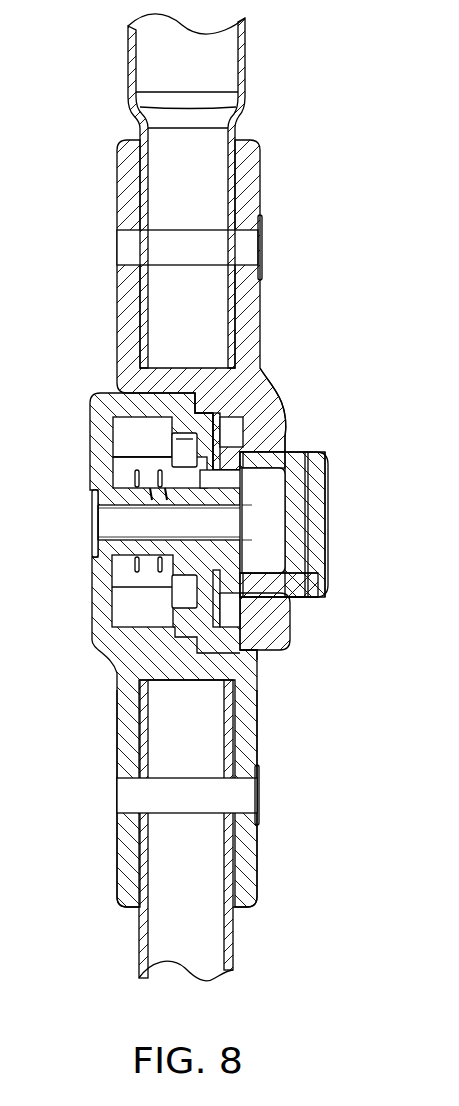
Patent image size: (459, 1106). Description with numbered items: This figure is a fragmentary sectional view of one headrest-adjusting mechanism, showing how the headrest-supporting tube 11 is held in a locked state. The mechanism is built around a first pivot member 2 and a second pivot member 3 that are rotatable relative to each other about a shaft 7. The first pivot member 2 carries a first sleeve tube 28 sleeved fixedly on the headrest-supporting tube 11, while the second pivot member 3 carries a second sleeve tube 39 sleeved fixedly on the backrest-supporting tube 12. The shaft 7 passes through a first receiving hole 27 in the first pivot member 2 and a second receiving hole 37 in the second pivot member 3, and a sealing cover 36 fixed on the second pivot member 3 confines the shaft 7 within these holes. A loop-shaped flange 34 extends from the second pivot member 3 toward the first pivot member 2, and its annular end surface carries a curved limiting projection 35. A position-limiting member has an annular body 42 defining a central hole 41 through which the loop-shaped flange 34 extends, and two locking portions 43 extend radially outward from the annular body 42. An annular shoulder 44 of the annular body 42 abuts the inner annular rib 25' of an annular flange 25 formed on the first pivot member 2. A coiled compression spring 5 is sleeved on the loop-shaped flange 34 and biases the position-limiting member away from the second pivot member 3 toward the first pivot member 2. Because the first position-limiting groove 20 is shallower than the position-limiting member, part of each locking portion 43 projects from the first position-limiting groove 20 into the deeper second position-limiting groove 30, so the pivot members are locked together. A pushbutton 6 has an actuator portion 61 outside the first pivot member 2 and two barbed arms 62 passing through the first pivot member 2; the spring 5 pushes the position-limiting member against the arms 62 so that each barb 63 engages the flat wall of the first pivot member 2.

The first pivot member 2 is at (278, 378).
The second pivot member 3 is at (103, 686).
The coiled compression spring 5 is at (150, 492).
The pushbutton 6 is at (334, 523).
The shaft 7 is at (112, 518).
The headrest-supporting tube 11 is at (244, 55).
The backrest-supporting tube 12 is at (234, 945).
The first position-limiting groove 20 is at (283, 392).
The annular flange 25 is at (321, 627).
The inner annular rib 25' is at (324, 667).
The first receiving hole 27 is at (250, 530).
The first sleeve tube 28 is at (251, 180).
The second position-limiting groove 30 is at (150, 440).
The loop-shaped flange 34 is at (180, 440).
The curved limiting projection 35 is at (298, 585).
The sealing cover 36 is at (132, 524).
The second receiving hole 37 is at (130, 530).
The second sleeve tube 39 is at (250, 875).
The central hole 41 is at (252, 456).
The annular body 42 is at (185, 580).
The locking portion 43 is at (140, 437).
The annular shoulder 44 is at (129, 650).
The actuator portion 61 is at (300, 563).
The barbed arm 62 is at (226, 448).
The barb 63 is at (262, 655).